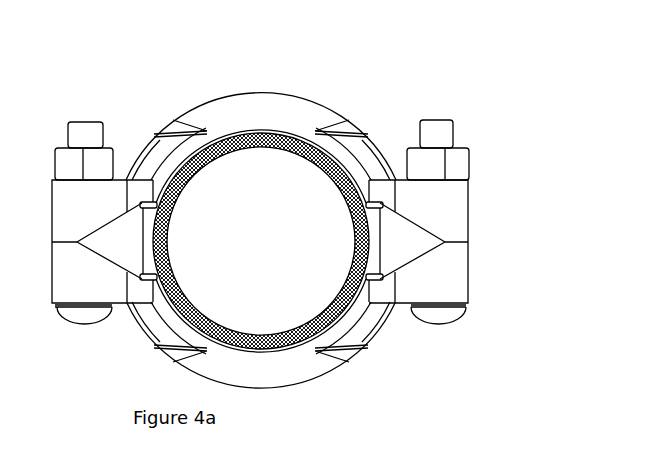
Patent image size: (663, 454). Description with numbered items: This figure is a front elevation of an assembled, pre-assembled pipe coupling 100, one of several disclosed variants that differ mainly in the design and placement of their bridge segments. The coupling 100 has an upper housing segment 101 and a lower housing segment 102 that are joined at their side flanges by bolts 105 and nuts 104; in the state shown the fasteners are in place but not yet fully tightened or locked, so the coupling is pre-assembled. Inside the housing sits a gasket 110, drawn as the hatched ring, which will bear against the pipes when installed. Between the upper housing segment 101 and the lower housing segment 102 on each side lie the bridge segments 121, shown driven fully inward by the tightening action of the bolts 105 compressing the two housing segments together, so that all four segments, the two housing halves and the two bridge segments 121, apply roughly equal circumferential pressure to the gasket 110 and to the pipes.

The coupling 100 is at (256, 234).
The upper housing segment 101 is at (365, 114).
The lower housing segment 102 is at (355, 359).
The nuts 104 is at (484, 153).
The bolts 105 is at (476, 319).
The gasket 110 is at (374, 227).
The bridge segments 121 is at (418, 251).